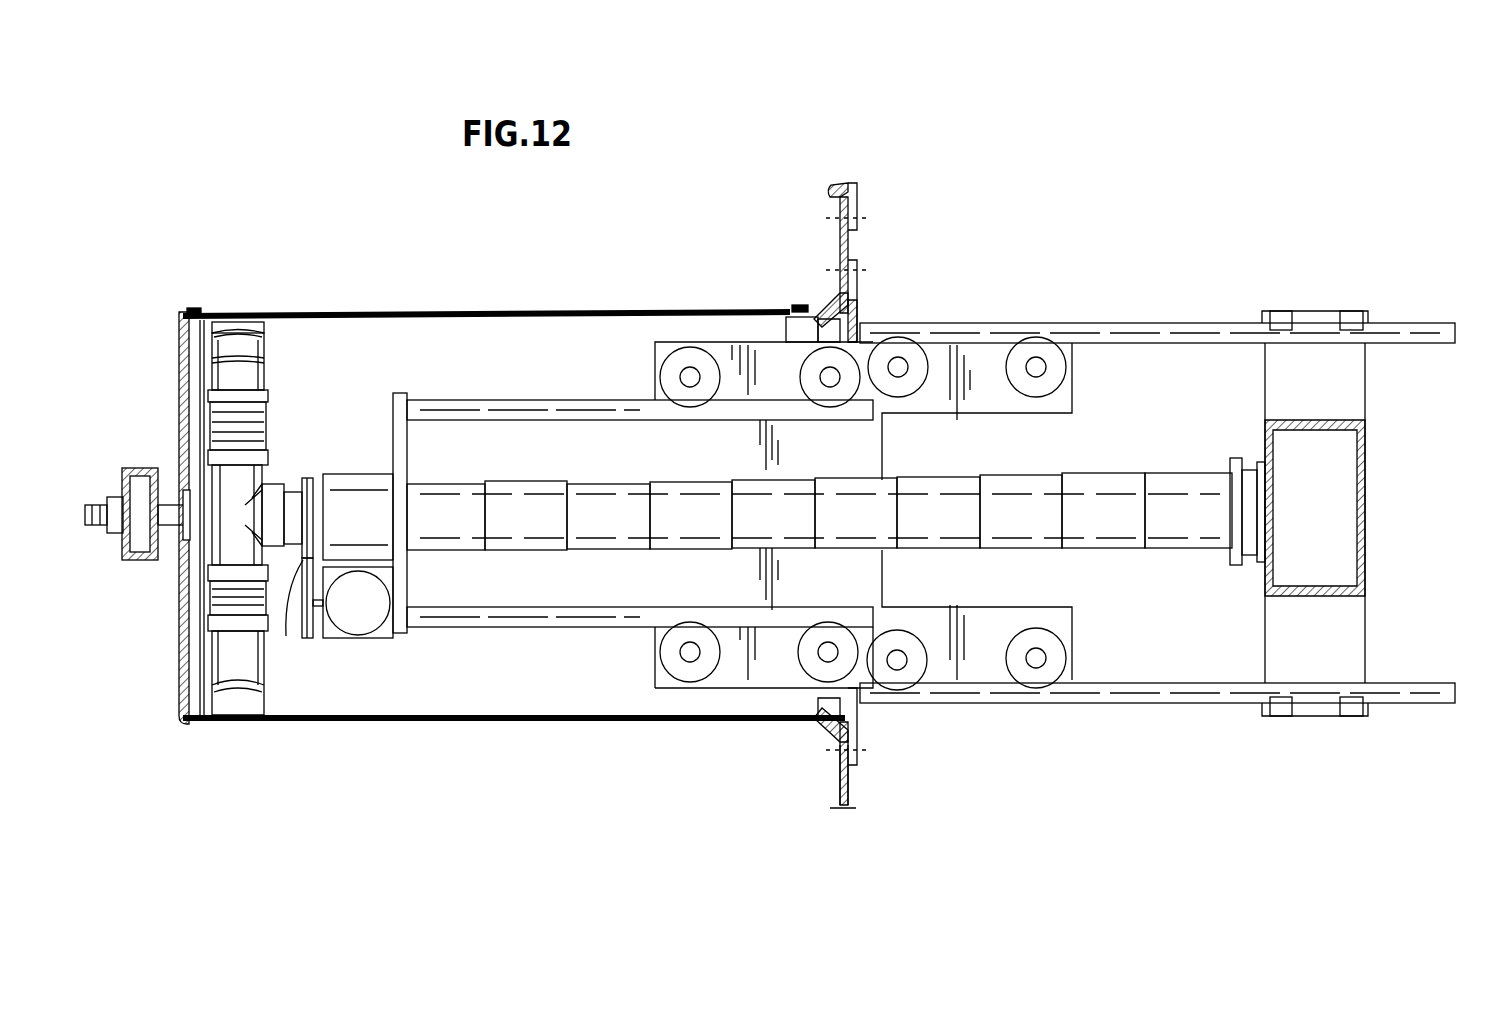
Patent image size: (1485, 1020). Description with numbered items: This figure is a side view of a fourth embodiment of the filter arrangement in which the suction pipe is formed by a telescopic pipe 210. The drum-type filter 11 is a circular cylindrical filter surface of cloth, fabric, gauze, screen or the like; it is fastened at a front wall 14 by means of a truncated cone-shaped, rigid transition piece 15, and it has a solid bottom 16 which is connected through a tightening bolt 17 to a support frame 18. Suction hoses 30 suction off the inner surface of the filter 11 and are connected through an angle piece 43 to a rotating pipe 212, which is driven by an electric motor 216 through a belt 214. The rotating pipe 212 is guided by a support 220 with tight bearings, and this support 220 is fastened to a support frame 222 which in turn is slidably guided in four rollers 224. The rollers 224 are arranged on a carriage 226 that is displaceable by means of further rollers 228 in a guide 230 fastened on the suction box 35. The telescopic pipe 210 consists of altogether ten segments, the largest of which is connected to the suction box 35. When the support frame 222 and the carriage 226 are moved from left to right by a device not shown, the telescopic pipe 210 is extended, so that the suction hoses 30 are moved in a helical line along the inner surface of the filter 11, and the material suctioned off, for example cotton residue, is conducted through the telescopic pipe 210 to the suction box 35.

The drum-type filter 11 is at (421, 313).
The front wall 14 is at (852, 788).
The transition piece 15 is at (852, 305).
The solid bottom 16 is at (178, 376).
The tightening bolt 17 is at (113, 532).
The support frame 18 is at (140, 466).
The suction hose 30 is at (268, 368).
The suction box 35 is at (1366, 505).
The angle piece 43 is at (256, 484).
The telescopic pipe 210 is at (530, 480).
The rotating pipe 212 is at (306, 480).
The belt 214 is at (298, 582).
The electric motor 216 is at (370, 617).
The support 220 is at (370, 476).
The support frame 222 is at (402, 392).
The rollers 224 is at (812, 372).
The carriage 226 is at (1070, 607).
The rollers 228 is at (905, 348).
The guide 230 is at (1158, 323).